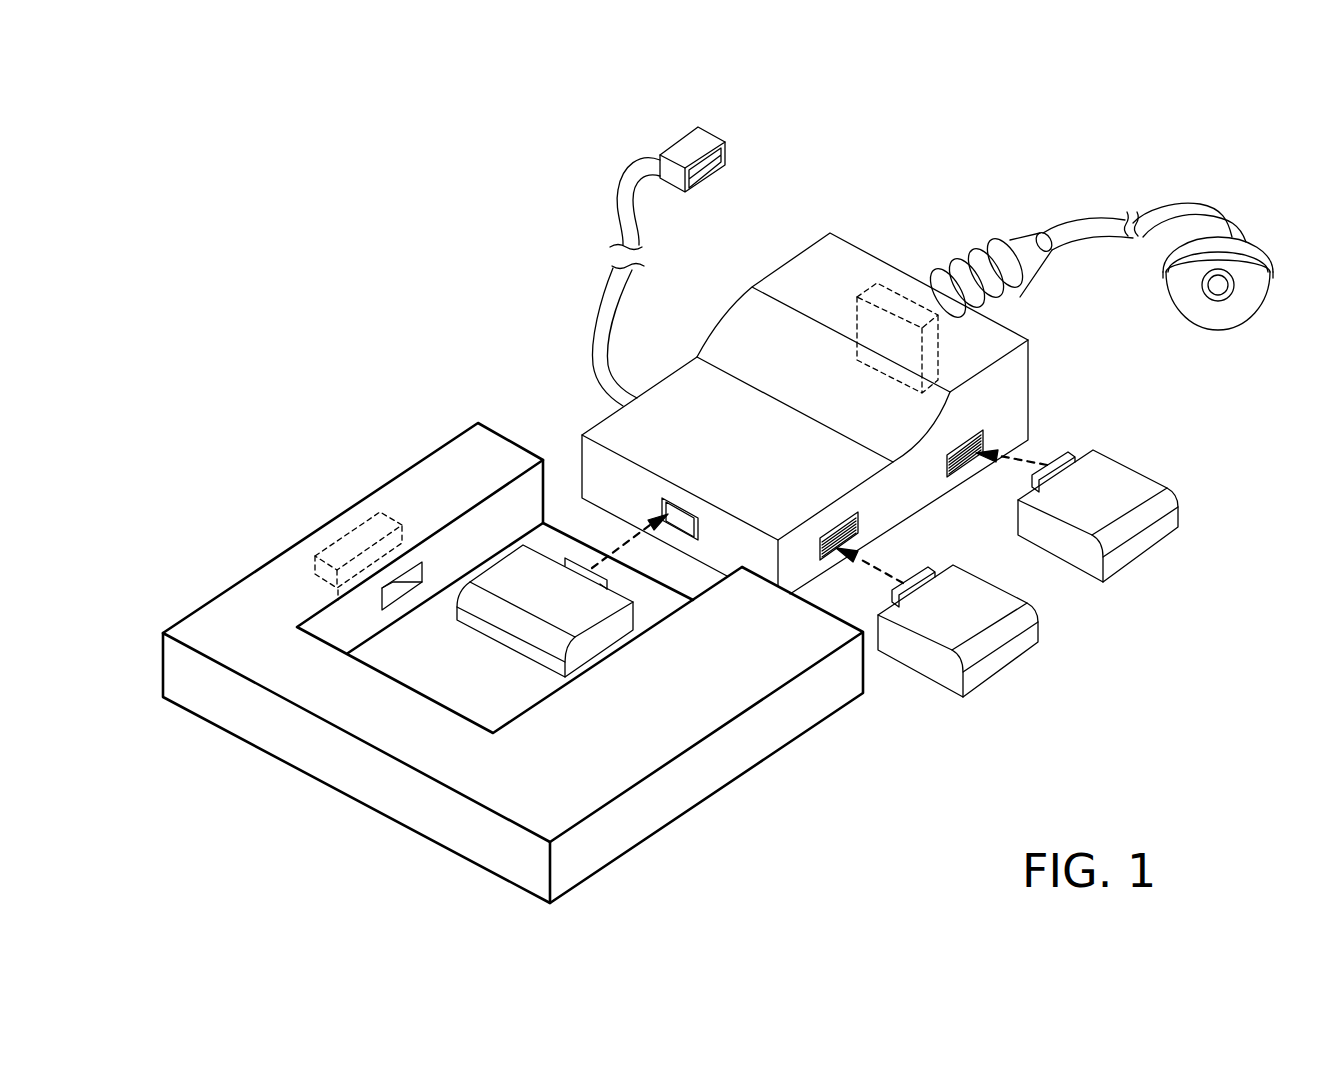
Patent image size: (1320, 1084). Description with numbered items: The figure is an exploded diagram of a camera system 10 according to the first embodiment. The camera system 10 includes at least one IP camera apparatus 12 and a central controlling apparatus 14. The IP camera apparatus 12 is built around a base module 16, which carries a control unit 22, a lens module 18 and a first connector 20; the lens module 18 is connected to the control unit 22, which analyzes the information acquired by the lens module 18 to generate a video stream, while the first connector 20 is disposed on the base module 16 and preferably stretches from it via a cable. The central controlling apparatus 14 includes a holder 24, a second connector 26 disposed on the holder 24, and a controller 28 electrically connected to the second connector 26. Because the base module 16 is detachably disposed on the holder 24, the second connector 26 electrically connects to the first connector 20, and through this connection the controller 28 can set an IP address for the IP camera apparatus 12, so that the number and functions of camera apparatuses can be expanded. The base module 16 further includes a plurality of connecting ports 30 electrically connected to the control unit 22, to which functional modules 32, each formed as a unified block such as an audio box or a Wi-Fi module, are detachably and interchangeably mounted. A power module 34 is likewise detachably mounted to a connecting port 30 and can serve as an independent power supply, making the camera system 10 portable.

The camera system 10 is at (470, 166).
The IP camera apparatus 12 is at (1160, 411).
The central controlling apparatus 14 is at (787, 770).
The base module 16 is at (1015, 375).
The lens module 18 is at (1220, 323).
The first connector 20 is at (705, 130).
The control unit 22 is at (889, 290).
The holder 24 is at (417, 654).
The second connector 26 is at (423, 565).
The controller 28 is at (352, 537).
The connecting ports 30 is at (660, 498).
The functional modules 32 is at (1007, 660).
The power module 34 is at (518, 567).